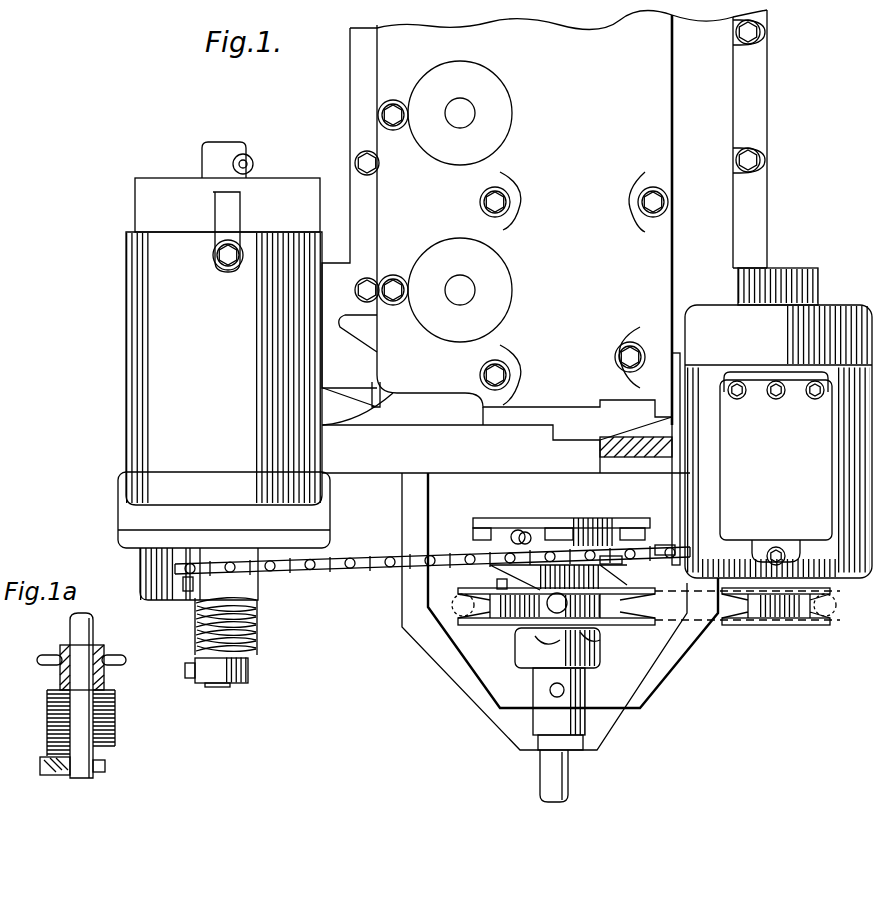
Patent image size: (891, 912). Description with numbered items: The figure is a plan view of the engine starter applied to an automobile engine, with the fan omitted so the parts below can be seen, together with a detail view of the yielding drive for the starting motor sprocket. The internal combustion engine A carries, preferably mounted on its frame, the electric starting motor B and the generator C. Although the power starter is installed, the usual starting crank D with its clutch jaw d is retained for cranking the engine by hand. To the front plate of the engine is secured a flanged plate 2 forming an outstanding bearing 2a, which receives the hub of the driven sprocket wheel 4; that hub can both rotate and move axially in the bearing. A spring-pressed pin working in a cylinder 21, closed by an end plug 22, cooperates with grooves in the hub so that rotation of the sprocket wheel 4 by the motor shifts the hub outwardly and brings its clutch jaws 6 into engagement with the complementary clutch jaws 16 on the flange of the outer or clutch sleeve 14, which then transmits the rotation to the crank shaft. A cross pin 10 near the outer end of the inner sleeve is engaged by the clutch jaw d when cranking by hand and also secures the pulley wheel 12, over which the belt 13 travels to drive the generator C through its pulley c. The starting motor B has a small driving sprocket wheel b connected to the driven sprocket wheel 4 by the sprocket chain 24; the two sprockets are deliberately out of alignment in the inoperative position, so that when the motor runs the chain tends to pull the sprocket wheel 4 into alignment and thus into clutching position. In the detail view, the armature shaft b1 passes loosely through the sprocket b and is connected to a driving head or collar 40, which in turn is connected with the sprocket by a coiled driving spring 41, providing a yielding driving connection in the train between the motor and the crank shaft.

In FIG. 1, the internal combustion engine A is at (544, 241).
In FIG. 1, the electric starting motor B is at (224, 371).
In FIG. 1, the generator C is at (778, 423).
In FIG. 1, the starting crank D is at (568, 778).
In FIG. 1, the flanged plate 2 is at (606, 520).
In FIG. 1, the outstanding bearing 2a is at (662, 542).
In FIG. 1, the sprocket wheel 4 is at (672, 558).
In FIG. 1, the clutch jaws 6 is at (618, 562).
In FIG. 1, the cross pin 10 is at (547, 604).
In FIG. 1, the pulley wheel 12 is at (503, 626).
In FIG. 1, the belt 13 is at (710, 625).
In FIG. 1, the outer or clutch sleeve 14 is at (548, 566).
In FIG. 1, the clutch jaws 16 is at (497, 584).
In FIG. 1, the cylinder 21 is at (528, 534).
In FIG. 1, the end plug 22 is at (517, 530).
In FIG. 1, the sprocket chain 24 is at (372, 560).
In FIG. 1, the driving head or collar 40 is at (238, 683).
In FIG. 1A, the driving head or collar 40 is at (95, 778).
In FIG. 1, the coiled driving spring 41 is at (256, 626).
In FIG. 1A, the coiled driving spring 41 is at (115, 713).
In FIG. 1, the driving sprocket wheel b is at (186, 600).
In FIG. 1A, the driving sprocket wheel b is at (126, 661).
In FIG. 1A, the armature shaft b1 is at (95, 636).
In FIG. 1, the generator pulley c is at (800, 622).
In FIG. 1, the clutch jaw d is at (557, 648).